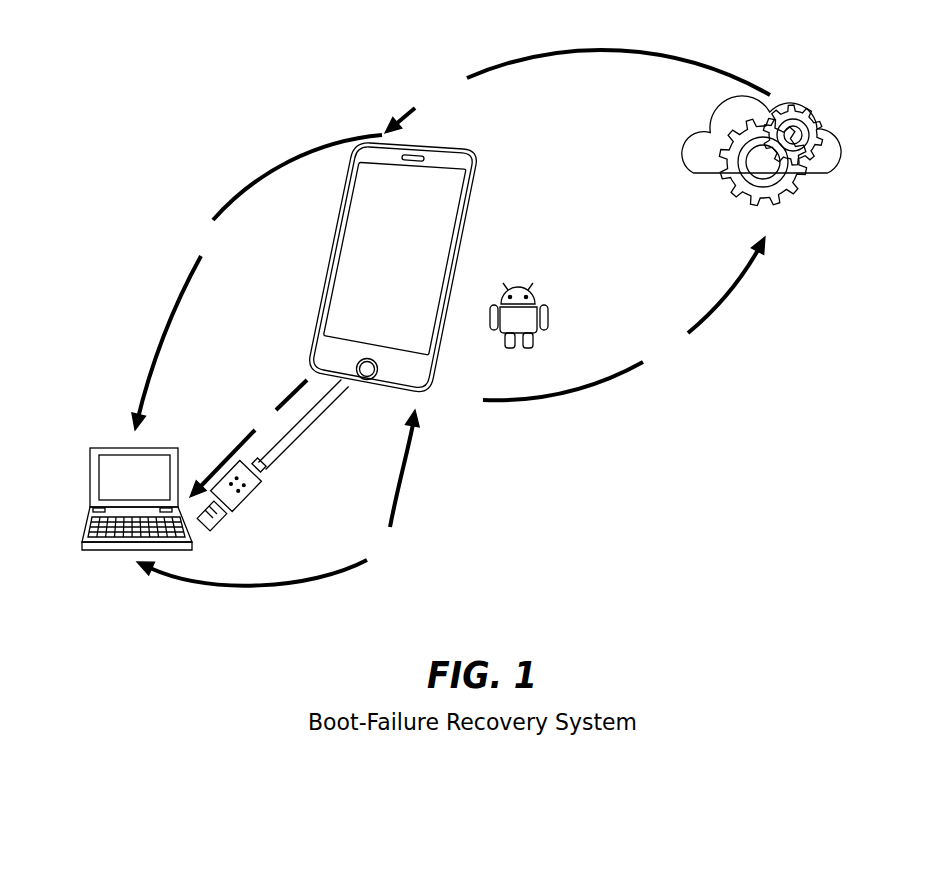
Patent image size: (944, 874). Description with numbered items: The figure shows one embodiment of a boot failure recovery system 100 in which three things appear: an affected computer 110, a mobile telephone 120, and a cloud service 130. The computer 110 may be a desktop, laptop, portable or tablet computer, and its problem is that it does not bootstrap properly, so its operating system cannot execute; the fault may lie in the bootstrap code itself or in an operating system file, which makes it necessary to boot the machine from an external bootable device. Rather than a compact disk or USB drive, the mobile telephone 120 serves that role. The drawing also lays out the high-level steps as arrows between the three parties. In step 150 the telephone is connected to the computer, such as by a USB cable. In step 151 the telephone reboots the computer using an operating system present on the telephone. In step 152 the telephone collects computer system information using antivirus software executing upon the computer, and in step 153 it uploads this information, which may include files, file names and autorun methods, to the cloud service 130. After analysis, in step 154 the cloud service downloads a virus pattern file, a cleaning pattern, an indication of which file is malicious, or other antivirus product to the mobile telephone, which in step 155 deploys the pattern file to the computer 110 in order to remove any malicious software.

The boot failure recovery system 100 is at (273, 73).
The affected computer 110 is at (115, 452).
The mobile telephone 120 is at (452, 230).
The cloud service 130 is at (772, 112).
The connecting step 150 is at (268, 469).
The reboot step 151 is at (237, 438).
The collect system information step 152 is at (362, 498).
The upload information step 153 is at (646, 318).
The download pattern step 154 is at (577, 91).
The deploy pattern step 155 is at (232, 282).